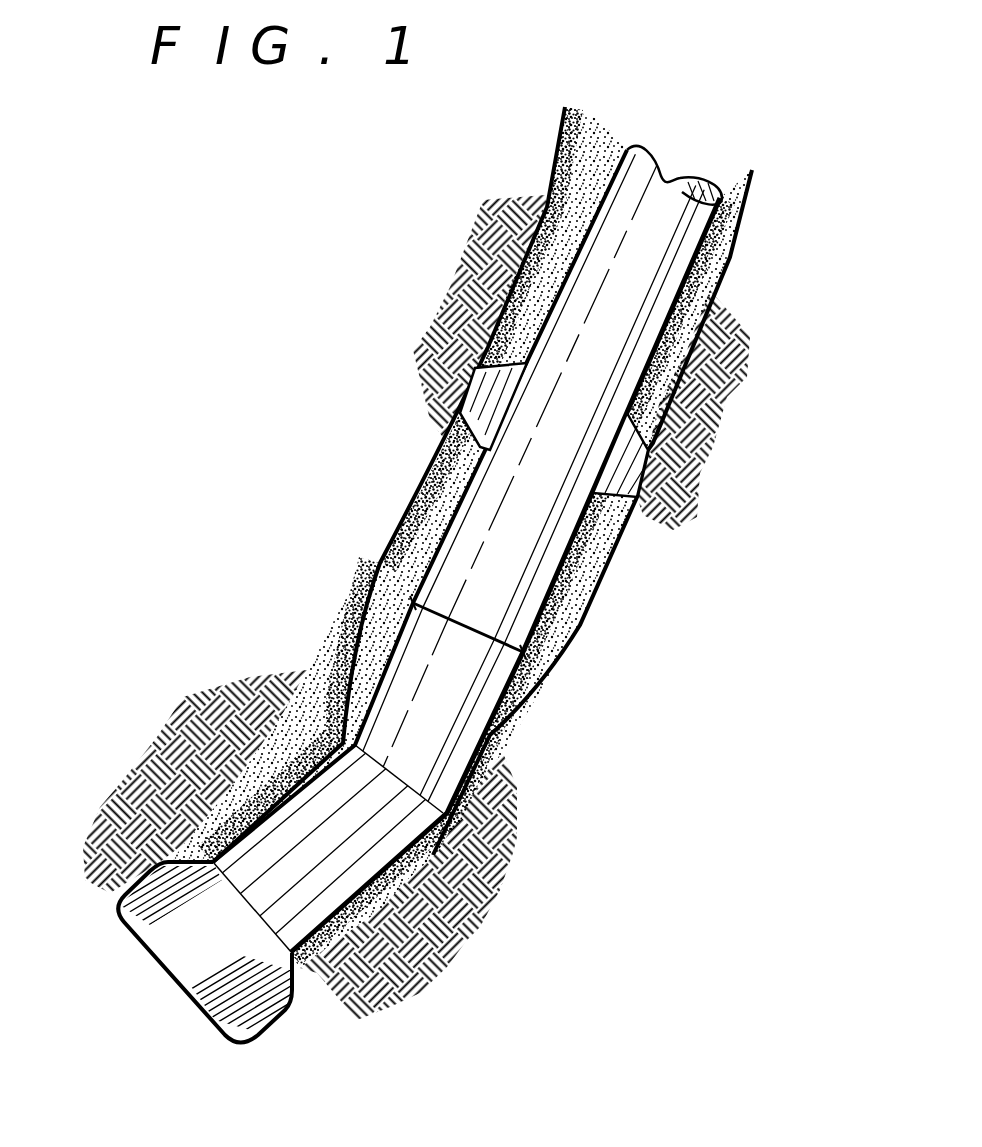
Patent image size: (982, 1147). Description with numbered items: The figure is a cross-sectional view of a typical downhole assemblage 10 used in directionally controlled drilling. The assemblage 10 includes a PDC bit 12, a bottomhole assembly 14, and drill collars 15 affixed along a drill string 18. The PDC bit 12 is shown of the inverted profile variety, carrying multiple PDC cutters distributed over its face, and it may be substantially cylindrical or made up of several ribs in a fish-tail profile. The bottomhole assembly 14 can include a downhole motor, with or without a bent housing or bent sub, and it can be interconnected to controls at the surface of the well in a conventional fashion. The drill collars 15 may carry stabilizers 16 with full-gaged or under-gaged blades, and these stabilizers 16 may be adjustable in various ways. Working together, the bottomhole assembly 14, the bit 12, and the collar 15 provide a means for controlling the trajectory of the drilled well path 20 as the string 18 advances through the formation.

The downhole assemblage 10 is at (603, 636).
The PDC bit 12 is at (167, 937).
The bottomhole assembly 14 is at (443, 783).
The drill collar 15 is at (610, 217).
The stabilizer 16 is at (470, 413).
The drill string 18 is at (720, 260).
The drilled well path 20 is at (347, 627).